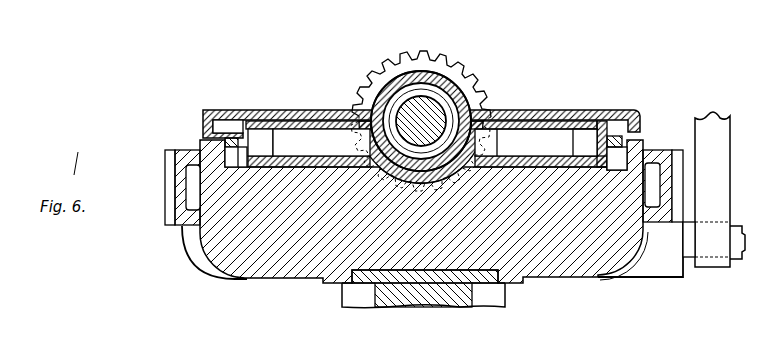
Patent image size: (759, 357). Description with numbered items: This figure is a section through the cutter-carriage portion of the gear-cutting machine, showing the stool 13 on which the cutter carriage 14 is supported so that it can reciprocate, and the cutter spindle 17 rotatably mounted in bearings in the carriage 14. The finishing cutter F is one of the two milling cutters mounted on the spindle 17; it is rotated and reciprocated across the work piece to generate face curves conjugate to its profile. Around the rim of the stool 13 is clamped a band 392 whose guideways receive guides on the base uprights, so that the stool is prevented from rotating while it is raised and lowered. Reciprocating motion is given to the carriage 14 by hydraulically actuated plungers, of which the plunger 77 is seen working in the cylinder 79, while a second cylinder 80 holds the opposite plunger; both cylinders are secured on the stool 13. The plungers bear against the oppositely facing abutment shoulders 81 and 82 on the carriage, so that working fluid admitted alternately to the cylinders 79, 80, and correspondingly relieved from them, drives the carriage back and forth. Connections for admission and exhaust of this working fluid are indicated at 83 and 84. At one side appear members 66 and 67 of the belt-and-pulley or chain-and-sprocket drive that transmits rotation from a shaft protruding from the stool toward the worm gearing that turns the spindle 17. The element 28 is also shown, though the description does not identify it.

The stool 13 is at (253, 252).
The cutter carriage 14 is at (327, 133).
The cutter spindle 17 is at (440, 118).
The bearing cup 28 is at (540, 137).
The belt and pulley drive 66 is at (705, 275).
The belt and pulley drive 67 is at (710, 130).
The plunger 77 is at (333, 147).
The cylinder 79 is at (260, 137).
The cylinder 80 is at (585, 137).
The abutment shoulder 81 is at (373, 102).
The abutment shoulder 82 is at (526, 80).
The working fluid connection 83 is at (238, 110).
The working fluid connection 84 is at (610, 138).
The band 392 is at (180, 202).
The finishing cutter F is at (450, 62).